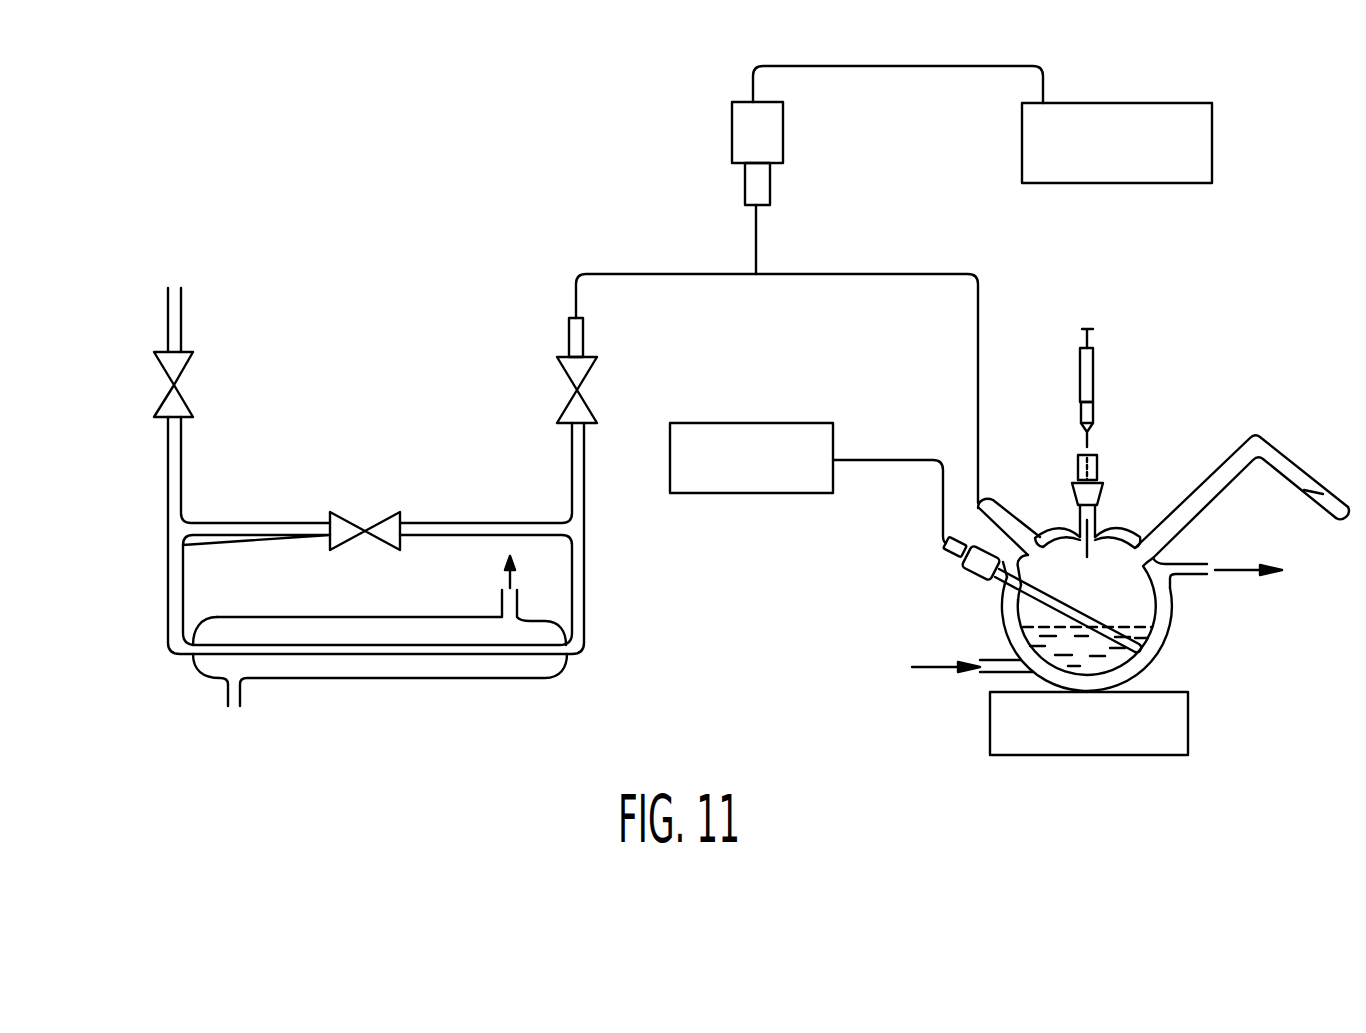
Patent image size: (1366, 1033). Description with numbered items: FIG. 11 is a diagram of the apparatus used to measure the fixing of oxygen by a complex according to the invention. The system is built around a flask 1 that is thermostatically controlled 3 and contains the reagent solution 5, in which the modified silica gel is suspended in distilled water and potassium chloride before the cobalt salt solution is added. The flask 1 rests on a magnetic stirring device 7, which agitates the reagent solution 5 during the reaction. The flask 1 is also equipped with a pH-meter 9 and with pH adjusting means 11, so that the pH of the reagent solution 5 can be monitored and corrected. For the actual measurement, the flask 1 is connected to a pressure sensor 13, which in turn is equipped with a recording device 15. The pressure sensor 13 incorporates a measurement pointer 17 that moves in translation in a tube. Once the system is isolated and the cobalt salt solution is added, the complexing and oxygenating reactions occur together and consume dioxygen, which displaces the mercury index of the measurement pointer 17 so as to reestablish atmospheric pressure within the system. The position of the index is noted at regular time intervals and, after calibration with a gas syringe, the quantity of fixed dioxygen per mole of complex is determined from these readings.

The flask 1 is at (1140, 592).
The thermostatic control 3 is at (1000, 667).
The reagent solution 5 is at (1043, 635).
The magnetic stirring device 7 is at (1180, 722).
The pH-meter 9 is at (768, 483).
The pH adjusting means 11 is at (1093, 382).
The pressure sensor 13 is at (454, 374).
The recording device 15 is at (1200, 126).
The measurement pointer 17 is at (492, 648).